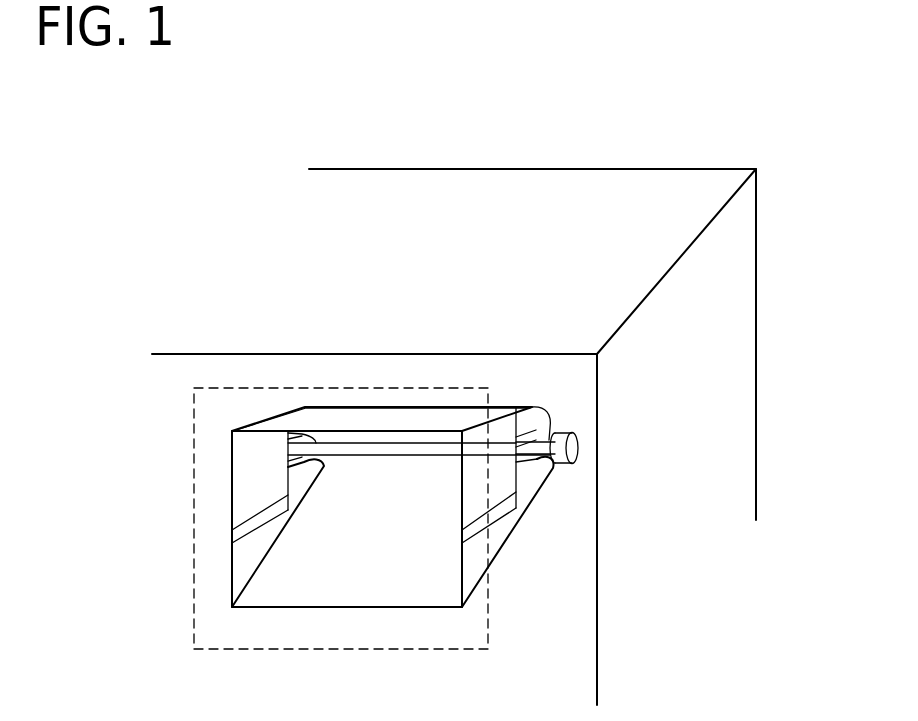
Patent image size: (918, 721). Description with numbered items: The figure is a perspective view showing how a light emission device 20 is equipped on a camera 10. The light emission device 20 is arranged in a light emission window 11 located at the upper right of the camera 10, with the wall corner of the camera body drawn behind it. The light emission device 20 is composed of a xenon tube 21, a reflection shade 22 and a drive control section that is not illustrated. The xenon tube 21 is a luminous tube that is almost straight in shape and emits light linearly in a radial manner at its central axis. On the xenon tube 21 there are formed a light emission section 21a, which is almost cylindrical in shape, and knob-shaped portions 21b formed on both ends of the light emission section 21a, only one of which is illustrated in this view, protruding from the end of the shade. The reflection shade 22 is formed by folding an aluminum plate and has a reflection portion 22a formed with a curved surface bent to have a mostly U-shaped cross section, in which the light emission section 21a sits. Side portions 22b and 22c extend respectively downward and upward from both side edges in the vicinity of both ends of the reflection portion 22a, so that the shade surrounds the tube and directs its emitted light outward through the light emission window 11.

The camera 10 is at (620, 273).
The light emission window 11 is at (342, 388).
The light emission device 20 is at (519, 556).
The xenon tube 21 is at (566, 418).
The light emission section 21a is at (413, 445).
The knob-shaped portion 21b is at (573, 447).
The reflection shade 22 is at (306, 600).
The reflection portion 22a is at (268, 415).
The side portion 22b is at (237, 477).
The side portion 22c is at (237, 562).